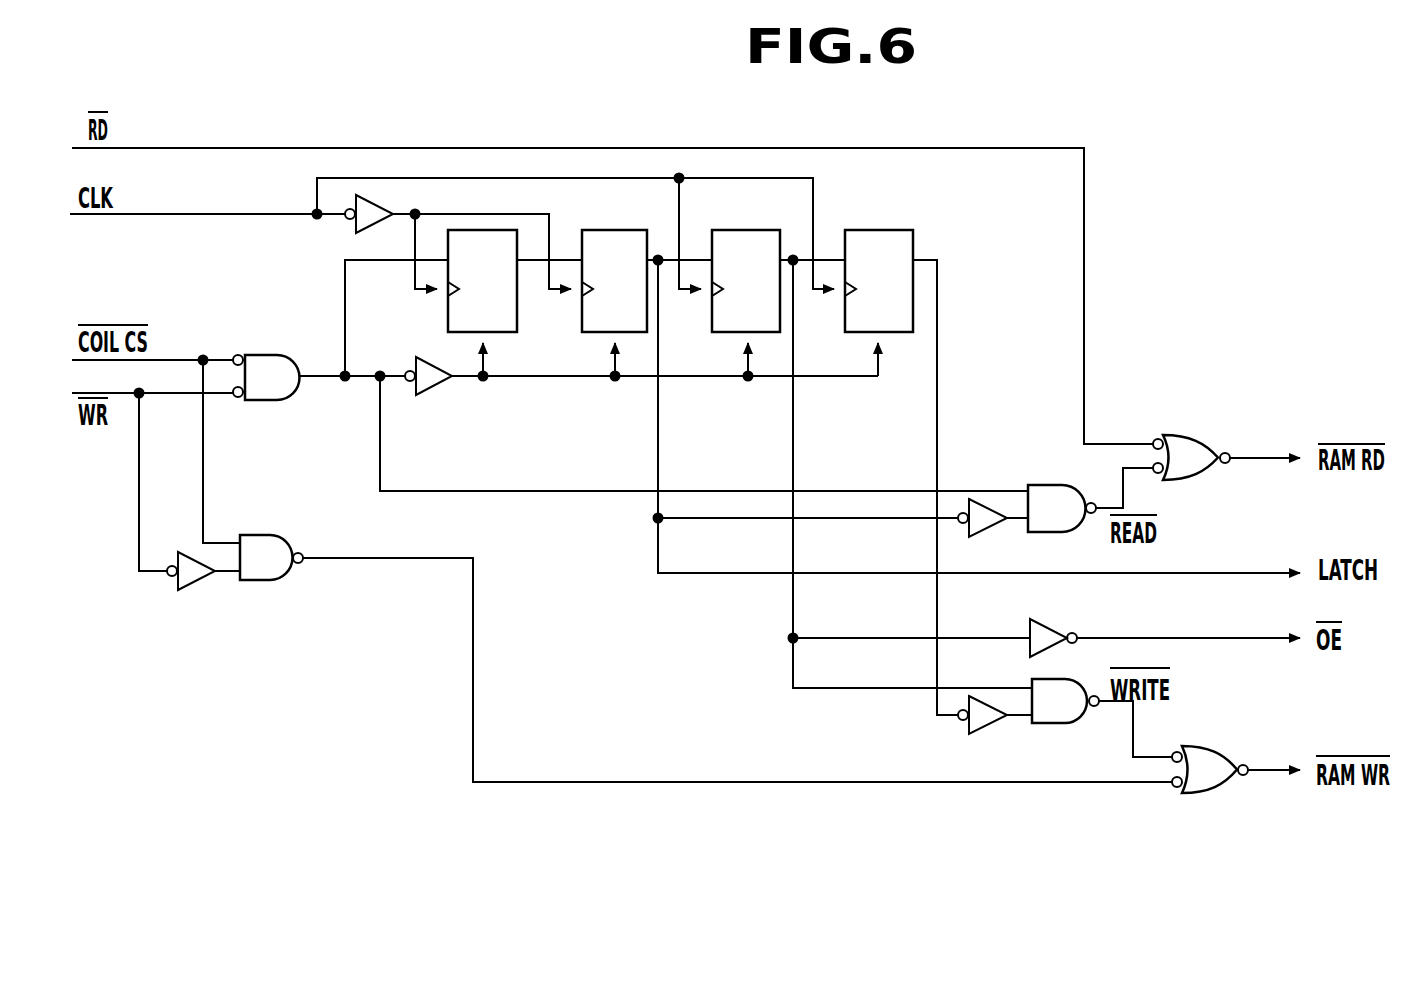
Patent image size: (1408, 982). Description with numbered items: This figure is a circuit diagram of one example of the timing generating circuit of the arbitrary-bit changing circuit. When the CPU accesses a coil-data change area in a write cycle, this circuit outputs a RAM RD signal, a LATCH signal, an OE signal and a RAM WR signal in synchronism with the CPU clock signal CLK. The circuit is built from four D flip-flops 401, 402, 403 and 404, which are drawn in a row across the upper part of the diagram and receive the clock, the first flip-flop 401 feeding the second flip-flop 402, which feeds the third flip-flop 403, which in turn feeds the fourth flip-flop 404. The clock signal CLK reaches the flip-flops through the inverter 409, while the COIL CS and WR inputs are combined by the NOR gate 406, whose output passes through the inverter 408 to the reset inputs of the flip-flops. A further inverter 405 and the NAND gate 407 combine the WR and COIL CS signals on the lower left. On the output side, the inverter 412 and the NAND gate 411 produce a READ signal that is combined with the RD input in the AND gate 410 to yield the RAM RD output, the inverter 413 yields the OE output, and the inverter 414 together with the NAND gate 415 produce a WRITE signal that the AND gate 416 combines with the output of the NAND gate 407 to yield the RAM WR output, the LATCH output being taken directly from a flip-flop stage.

The D flip-flop 401 is at (507, 332).
The D flip-flop 402 is at (600, 229).
The D flip-flop 403 is at (742, 229).
The D flip-flop 404 is at (875, 229).
The inverter 405 is at (202, 590).
The NOR gate 406 is at (290, 354).
The NAND gate 407 is at (286, 534).
The inverter 408 is at (440, 393).
The inverter 409 is at (352, 226).
The AND gate 410 is at (1180, 433).
The NAND gate 411 is at (1046, 484).
The inverter 412 is at (995, 531).
The inverter 413 is at (1052, 628).
The inverter 414 is at (994, 727).
The NAND gate 415 is at (1070, 724).
The AND gate 416 is at (1214, 793).